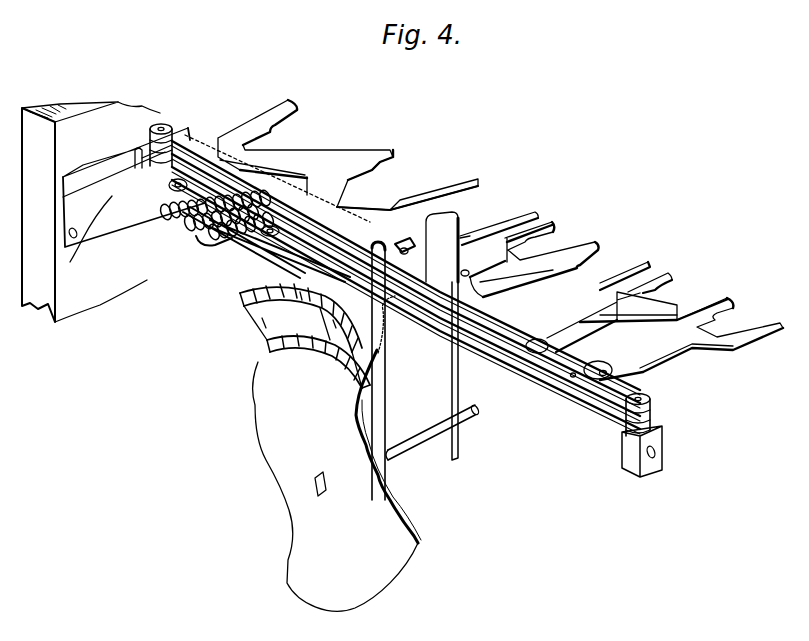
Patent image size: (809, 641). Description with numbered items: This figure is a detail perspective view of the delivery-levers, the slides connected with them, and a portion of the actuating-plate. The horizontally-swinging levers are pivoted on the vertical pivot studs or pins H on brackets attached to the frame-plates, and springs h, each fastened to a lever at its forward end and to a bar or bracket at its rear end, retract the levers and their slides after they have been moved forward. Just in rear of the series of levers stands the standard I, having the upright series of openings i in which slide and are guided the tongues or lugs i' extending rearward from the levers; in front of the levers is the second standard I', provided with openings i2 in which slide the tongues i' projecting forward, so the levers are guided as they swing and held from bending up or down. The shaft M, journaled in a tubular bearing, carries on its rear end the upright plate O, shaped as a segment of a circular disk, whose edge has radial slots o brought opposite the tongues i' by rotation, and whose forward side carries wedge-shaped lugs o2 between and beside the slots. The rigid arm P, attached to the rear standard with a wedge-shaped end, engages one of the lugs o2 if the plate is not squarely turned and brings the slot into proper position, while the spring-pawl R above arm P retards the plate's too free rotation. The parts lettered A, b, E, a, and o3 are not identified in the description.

The frame standard A is at (91, 207).
The vertical pivot studs or pins H is at (163, 126).
The bracket b is at (88, 180).
The springs h is at (163, 222).
The forked lever E is at (500, 240).
The bar a is at (512, 376).
The spring-pawl R is at (340, 214).
The second standard I' is at (448, 334).
The standard I is at (386, 371).
The tongues or lugs i' is at (402, 298).
The openings i2 is at (450, 270).
The openings i is at (392, 325).
The rigid arm P is at (306, 350).
The radial slots o is at (262, 318).
The wedge-shaped projections or lugs o2 is at (300, 292).
The slot o3 is at (333, 320).
The upright plate O is at (337, 480).
The shaft M is at (400, 455).